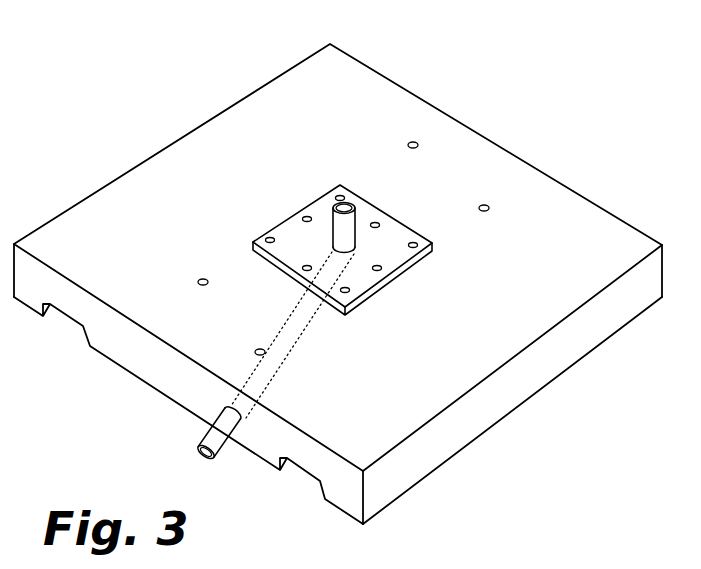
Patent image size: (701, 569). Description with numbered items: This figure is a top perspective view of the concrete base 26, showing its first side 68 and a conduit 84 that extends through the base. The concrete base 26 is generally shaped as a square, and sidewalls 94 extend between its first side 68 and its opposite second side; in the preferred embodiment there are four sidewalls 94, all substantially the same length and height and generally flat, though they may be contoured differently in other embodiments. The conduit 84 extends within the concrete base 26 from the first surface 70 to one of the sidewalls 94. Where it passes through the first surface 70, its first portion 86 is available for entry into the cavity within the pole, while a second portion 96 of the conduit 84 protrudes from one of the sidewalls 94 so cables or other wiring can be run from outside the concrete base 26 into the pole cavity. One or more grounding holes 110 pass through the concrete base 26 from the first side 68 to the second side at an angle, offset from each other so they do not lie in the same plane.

The concrete base 26 is at (585, 228).
The first side 68 is at (268, 109).
The first surface 70 is at (364, 258).
The conduit 84 is at (300, 340).
The first portion 86 is at (336, 222).
The sidewalls 94 is at (150, 375).
The second portion 96 is at (222, 440).
The grounding holes 110 is at (418, 143).